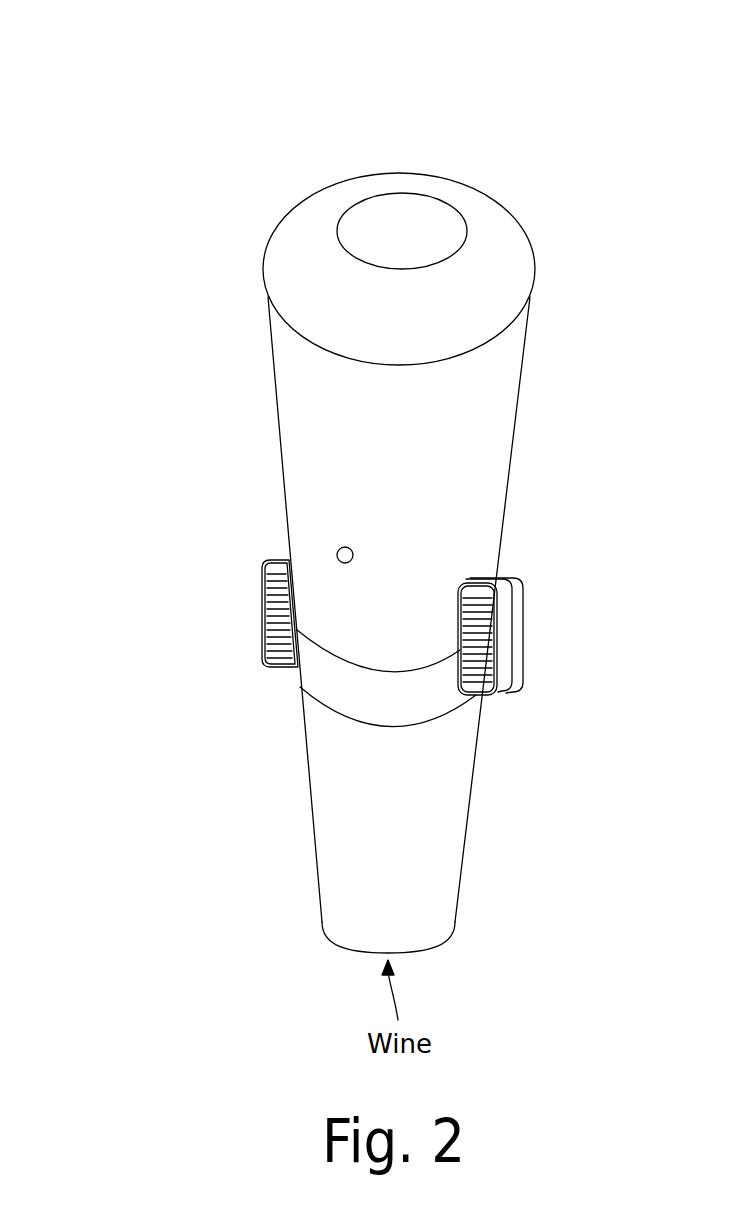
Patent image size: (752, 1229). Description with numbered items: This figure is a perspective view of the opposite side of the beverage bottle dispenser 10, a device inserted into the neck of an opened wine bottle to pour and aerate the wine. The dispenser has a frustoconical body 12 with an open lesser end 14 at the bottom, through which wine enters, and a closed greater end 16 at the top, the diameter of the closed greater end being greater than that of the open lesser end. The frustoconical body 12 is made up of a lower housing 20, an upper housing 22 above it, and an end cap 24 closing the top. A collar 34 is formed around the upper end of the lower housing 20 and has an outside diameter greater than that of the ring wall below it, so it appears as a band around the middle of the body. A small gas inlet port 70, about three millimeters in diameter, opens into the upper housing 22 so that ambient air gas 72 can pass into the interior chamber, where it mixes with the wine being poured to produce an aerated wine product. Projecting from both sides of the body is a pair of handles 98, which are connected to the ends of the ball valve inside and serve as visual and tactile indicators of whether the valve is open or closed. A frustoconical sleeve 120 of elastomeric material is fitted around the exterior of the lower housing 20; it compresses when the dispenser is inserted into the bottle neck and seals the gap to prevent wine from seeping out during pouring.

The beverage bottle dispenser 10 is at (605, 113).
The frustoconical body 12 is at (272, 393).
The open lesser end 14 is at (347, 950).
The closed greater end 16 is at (372, 182).
The lower housing 20 is at (363, 878).
The upper housing 22 is at (492, 440).
The end cap 24 is at (510, 265).
The collar 34 is at (330, 682).
The gas inlet port 70 is at (342, 548).
The ambient air gas 72 is at (337, 554).
The handle 98 is at (263, 592).
The frustoconical sleeve 120 is at (342, 820).